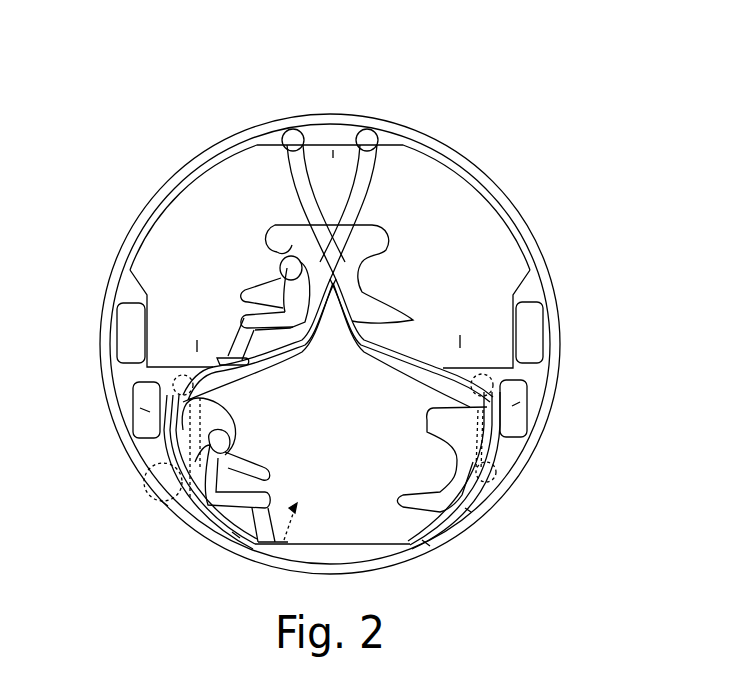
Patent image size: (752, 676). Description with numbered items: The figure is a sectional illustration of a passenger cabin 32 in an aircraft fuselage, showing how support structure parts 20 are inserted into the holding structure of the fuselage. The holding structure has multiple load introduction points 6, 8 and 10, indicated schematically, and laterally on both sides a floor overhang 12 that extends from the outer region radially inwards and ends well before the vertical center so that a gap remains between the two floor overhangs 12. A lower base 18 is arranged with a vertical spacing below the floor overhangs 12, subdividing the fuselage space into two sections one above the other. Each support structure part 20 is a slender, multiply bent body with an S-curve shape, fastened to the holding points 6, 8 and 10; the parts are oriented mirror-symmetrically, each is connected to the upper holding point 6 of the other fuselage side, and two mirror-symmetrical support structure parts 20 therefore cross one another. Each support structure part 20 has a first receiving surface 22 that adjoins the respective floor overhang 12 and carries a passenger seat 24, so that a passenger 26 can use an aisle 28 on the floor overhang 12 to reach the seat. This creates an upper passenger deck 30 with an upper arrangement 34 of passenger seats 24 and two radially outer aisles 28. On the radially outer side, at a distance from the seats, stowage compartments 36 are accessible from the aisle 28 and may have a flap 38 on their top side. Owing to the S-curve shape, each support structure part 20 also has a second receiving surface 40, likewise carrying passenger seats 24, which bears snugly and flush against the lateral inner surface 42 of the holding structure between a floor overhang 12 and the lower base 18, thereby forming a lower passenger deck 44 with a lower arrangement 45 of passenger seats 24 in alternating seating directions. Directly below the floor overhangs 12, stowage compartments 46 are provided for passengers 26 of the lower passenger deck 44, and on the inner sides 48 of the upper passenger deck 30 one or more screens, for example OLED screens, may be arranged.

The load introduction point 6 is at (290, 130).
The load introduction point 8 is at (140, 410).
The load introduction point 10 is at (235, 535).
The floor overhang 12 is at (197, 354).
The lower base 18 is at (333, 546).
The support structure part 20 is at (370, 188).
The first receiving surface 22 is at (342, 336).
The passenger seat 24 is at (280, 243).
The passenger 26 is at (272, 275).
The aisle 28 is at (181, 358).
The upper passenger deck 30 is at (330, 266).
The passenger cabin 32 is at (454, 169).
The upper arrangement 34 is at (332, 158).
The stowage compartment 36 is at (135, 335).
The flap 38 is at (130, 245).
The second receiving surface 40 is at (163, 502).
The lateral inner surface 42 is at (150, 478).
The lower passenger deck 44 is at (332, 470).
The lower arrangement 45 is at (283, 542).
The stowage compartment 46 is at (147, 430).
The inner side 48 is at (174, 198).